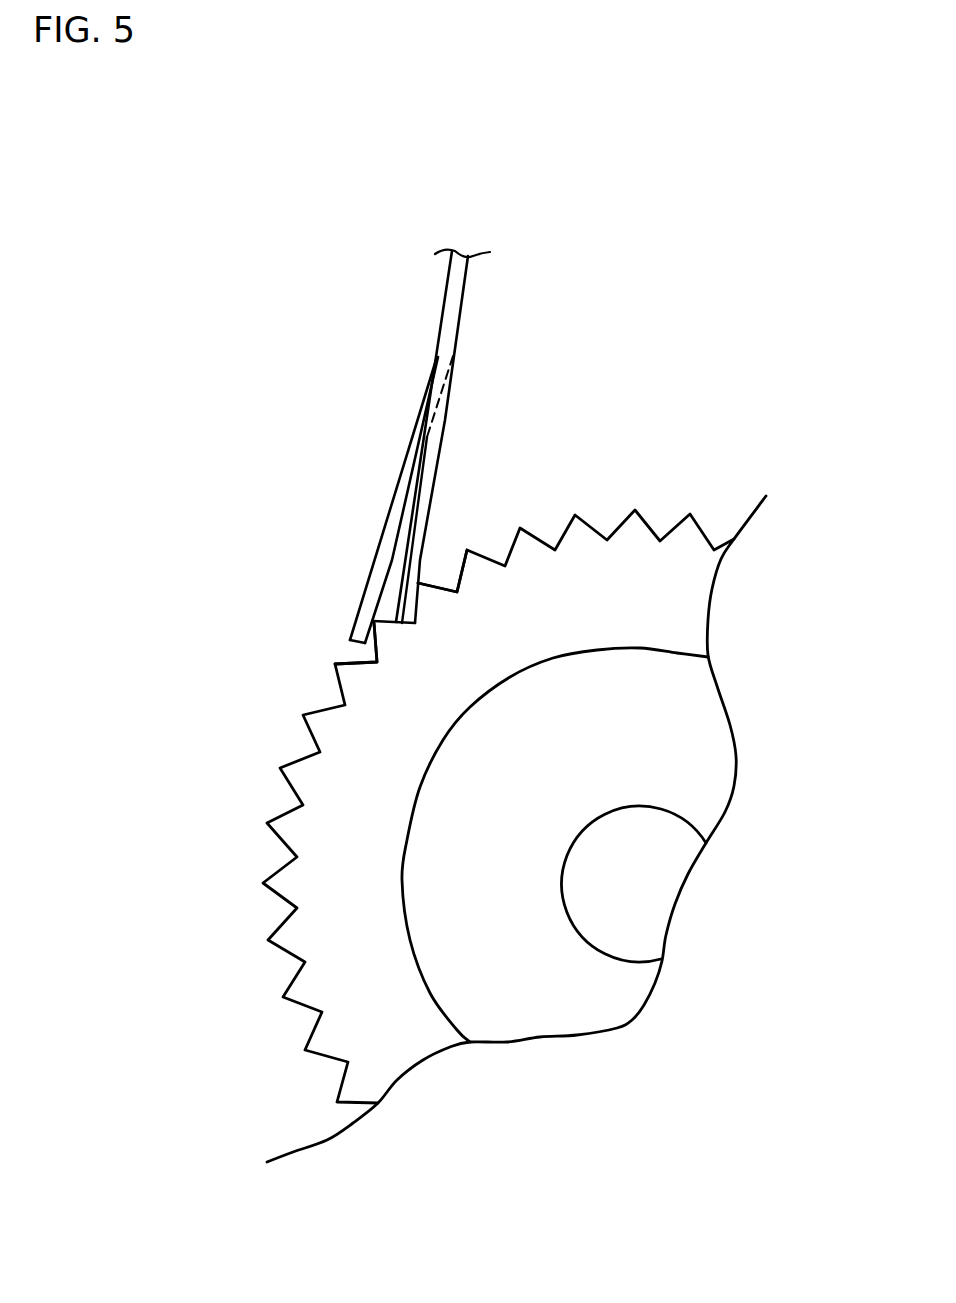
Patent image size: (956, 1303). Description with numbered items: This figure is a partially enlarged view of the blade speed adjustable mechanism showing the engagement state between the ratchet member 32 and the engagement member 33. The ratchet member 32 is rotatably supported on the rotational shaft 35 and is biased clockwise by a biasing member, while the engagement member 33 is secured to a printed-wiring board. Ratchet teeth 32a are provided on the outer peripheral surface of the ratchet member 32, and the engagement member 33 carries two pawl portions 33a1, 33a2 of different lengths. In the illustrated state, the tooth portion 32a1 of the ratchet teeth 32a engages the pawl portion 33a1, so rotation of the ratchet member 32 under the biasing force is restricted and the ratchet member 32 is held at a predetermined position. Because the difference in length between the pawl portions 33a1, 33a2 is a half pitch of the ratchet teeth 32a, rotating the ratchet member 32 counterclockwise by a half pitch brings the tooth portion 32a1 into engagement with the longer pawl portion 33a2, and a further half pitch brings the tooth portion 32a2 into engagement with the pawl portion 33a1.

The ratchet member 32 is at (477, 895).
The ratchet teeth 32a is at (690, 533).
The tooth portion 32a1 is at (388, 637).
The tooth portion 32a2 is at (428, 597).
The engagement member 33 is at (453, 297).
The pawl portion 33a1 is at (418, 527).
The pawl portion 33a2 is at (390, 535).
The rotational shaft 35 is at (641, 847).